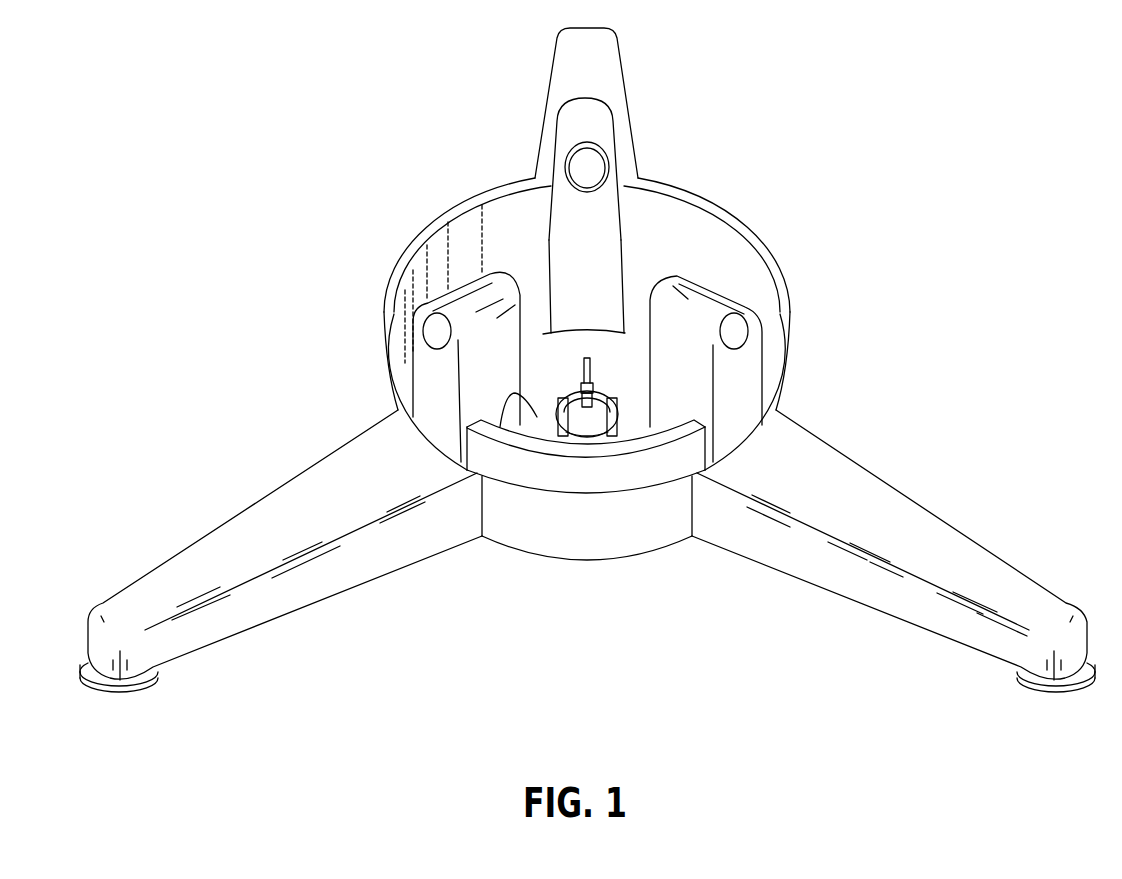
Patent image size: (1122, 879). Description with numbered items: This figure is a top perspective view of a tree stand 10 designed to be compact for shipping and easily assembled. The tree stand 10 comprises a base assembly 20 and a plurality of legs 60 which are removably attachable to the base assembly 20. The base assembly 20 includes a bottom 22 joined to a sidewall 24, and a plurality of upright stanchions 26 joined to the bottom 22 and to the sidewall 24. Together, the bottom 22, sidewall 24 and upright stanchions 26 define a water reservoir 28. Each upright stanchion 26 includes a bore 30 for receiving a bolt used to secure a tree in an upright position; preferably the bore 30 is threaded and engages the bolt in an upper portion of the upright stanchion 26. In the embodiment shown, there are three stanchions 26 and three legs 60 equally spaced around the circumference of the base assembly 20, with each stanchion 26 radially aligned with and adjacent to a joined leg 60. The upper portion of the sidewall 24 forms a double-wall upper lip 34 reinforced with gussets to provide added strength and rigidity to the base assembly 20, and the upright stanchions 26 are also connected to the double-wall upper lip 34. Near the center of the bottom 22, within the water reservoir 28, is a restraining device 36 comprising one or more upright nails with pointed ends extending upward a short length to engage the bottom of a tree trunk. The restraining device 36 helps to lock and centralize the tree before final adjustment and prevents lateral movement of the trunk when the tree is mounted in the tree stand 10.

The tree stand 10 is at (362, 237).
The base assembly 20 is at (792, 323).
The bottom 22 is at (533, 313).
The sidewall 24 is at (557, 525).
The upright stanchion 26 is at (430, 351).
The water reservoir 28 is at (500, 427).
The bore 30 is at (738, 338).
The double-wall upper lip 34 is at (643, 467).
The restraining device 36 is at (587, 357).
The legs 60 is at (245, 528).